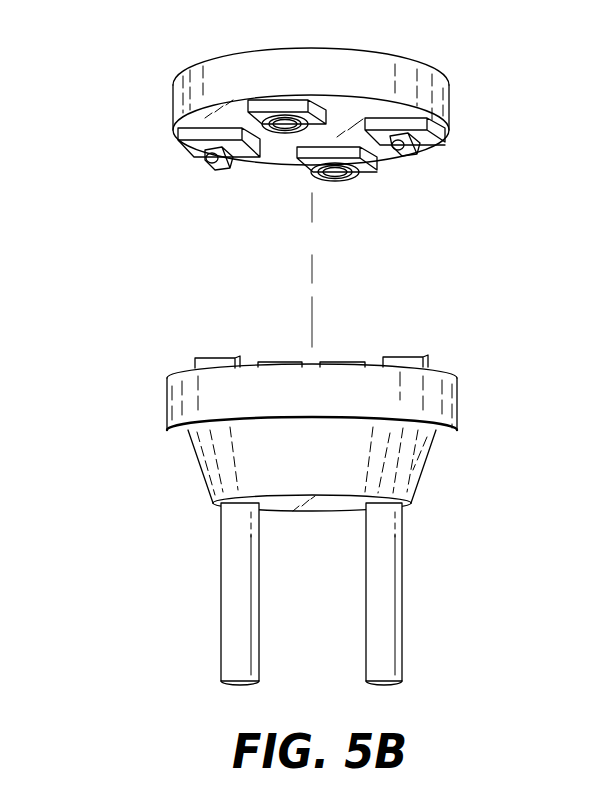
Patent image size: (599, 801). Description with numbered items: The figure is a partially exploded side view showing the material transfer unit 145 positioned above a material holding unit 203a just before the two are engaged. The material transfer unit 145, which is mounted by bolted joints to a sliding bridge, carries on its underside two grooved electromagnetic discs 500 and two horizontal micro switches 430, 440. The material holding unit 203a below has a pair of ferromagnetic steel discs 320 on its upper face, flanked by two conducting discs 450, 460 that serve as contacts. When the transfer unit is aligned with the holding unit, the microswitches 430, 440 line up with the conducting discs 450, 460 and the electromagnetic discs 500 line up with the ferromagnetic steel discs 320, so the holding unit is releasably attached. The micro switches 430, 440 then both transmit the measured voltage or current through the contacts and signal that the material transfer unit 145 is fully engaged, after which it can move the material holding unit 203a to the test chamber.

The material transfer unit 145 is at (452, 102).
The electromagnetic discs 500 is at (278, 120).
The horizontal micro switch 440 is at (217, 168).
The horizontal micro switch 430 is at (418, 155).
The material holding unit 203a is at (167, 402).
The conducting disc 450 is at (205, 357).
The ferromagnetic steel discs 320 is at (278, 358).
The conducting disc 460 is at (430, 362).